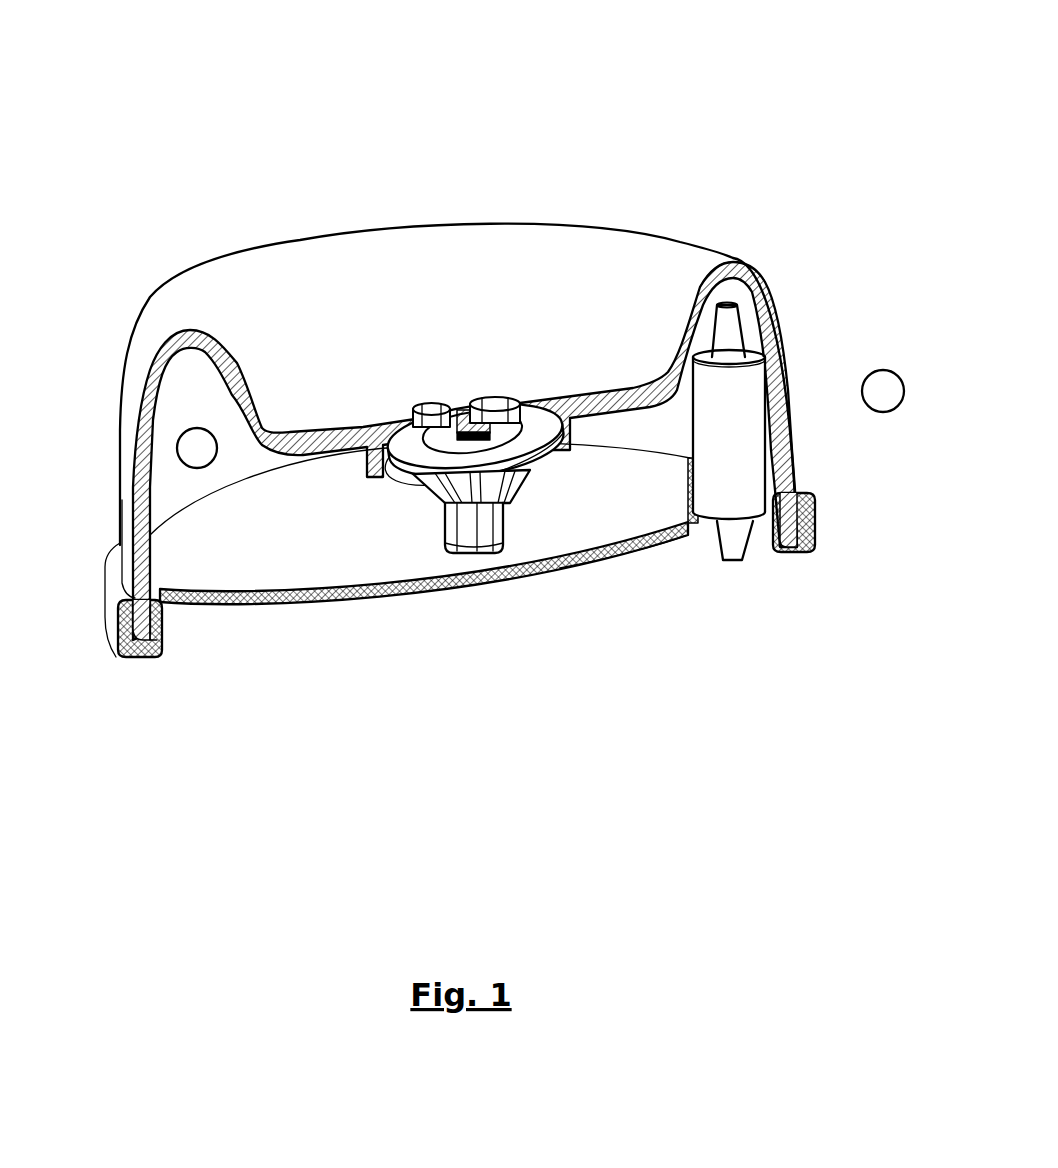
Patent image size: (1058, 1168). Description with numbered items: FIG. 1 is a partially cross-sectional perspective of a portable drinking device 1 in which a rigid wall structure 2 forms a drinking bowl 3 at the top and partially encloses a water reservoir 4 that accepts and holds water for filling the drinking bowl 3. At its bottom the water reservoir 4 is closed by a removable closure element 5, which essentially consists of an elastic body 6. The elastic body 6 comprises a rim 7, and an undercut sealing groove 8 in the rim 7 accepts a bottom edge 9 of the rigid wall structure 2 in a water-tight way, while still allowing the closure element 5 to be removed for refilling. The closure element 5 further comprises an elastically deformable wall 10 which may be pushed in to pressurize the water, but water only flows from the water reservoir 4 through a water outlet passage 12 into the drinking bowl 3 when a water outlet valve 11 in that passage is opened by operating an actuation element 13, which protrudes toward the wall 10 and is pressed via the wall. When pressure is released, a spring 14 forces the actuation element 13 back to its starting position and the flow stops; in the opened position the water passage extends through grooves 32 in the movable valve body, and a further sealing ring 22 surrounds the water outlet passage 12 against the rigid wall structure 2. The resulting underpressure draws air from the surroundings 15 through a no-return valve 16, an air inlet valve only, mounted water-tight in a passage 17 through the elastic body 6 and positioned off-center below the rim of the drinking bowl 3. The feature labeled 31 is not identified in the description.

The portable drinking device 1 is at (652, 165).
The rigid wall structure 2 is at (780, 303).
The drinking bowl 3 is at (293, 372).
The water reservoir 4 is at (197, 448).
The removable closure element 5 is at (120, 667).
The elastic body 6 is at (627, 556).
The rim 7 is at (815, 515).
The undercut sealing groove 8 is at (140, 658).
The bottom edge 9 is at (150, 652).
The elastically deformable wall 10 is at (383, 601).
The water outlet valve 11 is at (516, 518).
The water outlet passage 12 is at (500, 410).
The actuation element 13 is at (483, 555).
The spring 14 is at (465, 420).
The surroundings 15 is at (883, 391).
The no-return valve 16 is at (748, 413).
The passage 17 is at (697, 524).
The further sealing ring 22 is at (425, 460).
The hump 31 is at (748, 263).
The grooves 32 is at (490, 523).